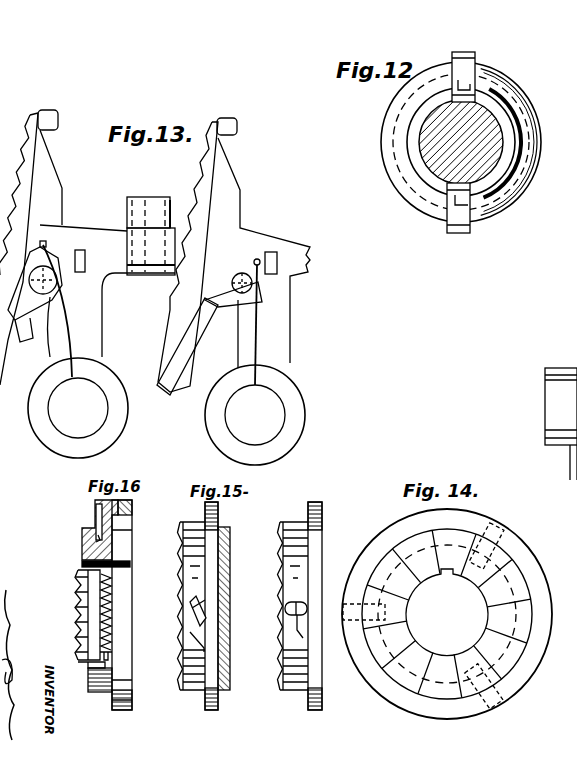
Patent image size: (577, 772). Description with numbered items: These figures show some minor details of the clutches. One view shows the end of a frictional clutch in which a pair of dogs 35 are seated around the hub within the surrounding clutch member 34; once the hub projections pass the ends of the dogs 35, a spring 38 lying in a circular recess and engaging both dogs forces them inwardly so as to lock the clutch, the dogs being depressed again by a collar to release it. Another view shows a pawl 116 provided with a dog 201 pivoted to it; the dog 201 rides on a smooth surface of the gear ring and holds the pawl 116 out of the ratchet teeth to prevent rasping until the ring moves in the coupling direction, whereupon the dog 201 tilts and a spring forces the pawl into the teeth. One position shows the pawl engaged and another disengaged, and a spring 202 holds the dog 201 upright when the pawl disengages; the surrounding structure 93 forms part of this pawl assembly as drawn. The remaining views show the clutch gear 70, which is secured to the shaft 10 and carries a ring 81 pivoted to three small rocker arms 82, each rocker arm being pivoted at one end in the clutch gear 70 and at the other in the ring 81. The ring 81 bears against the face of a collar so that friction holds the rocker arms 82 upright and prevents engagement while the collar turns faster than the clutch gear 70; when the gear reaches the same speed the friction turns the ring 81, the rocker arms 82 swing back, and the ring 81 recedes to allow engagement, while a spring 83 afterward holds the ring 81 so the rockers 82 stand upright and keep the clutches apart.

In FIG. 12, the shaft 10 is at (444, 153).
In FIG. 12, the bearing ring 34 is at (402, 105).
In FIG. 12, the dogs 35 is at (475, 60).
In FIG. 12, the spring 38 is at (528, 116).
In FIG. 13, the strip 93 is at (110, 252).
In FIG. 13, the pawl 116 is at (307, 295).
In FIG. 13, the dog 201 is at (40, 322).
In FIG. 13, the spring 202 is at (70, 319).
In FIG. 16, the clutch gear 70 is at (82, 545).
In FIG. 15, the clutch gear 70 is at (180, 538).
In FIG. 14, the clutch gear 70 is at (446, 613).
In FIG. 16, the ring 81 is at (133, 508).
In FIG. 15, the ring 81 is at (218, 513).
In FIG. 14, the ring 81 is at (536, 576).
In FIG. 16, the rocker arms 82 is at (96, 506).
In FIG. 15, the rocker arms 82 is at (190, 608).
In FIG. 14, the rocker arms 82 is at (495, 535).
In FIG. 16, the spring 83 is at (100, 600).